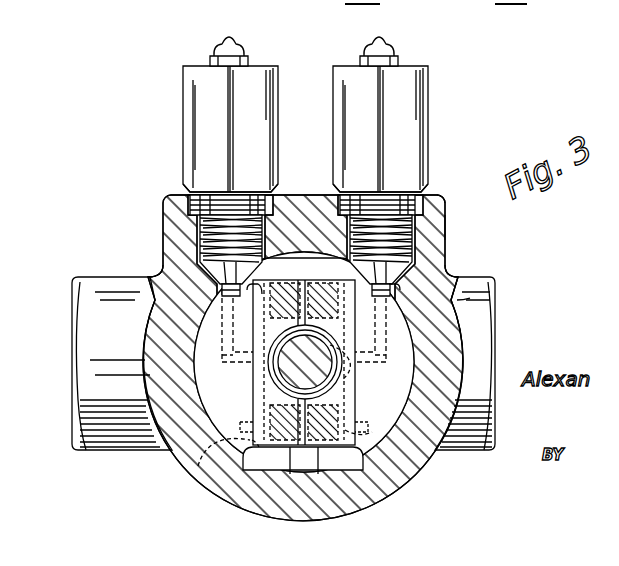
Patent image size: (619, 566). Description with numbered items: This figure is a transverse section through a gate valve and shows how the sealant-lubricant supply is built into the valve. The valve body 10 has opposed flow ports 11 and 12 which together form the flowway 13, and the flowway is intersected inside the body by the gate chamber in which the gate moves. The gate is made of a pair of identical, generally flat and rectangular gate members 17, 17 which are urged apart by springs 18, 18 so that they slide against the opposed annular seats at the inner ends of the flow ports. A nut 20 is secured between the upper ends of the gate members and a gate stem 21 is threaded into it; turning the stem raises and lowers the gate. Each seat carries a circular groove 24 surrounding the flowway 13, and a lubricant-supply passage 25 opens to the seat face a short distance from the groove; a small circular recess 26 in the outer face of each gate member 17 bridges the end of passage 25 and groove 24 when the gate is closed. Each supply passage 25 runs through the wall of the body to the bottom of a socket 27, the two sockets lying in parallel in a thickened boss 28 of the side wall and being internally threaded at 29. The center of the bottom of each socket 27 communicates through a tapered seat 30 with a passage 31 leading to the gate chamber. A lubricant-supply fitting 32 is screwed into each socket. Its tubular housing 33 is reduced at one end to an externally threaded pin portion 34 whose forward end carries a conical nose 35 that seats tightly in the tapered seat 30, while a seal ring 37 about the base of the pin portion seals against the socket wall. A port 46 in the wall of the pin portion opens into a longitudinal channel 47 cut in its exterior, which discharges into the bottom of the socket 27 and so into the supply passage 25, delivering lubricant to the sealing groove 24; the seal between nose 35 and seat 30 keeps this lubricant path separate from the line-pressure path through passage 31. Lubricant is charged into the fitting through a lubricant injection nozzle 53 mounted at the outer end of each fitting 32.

The valve body 10 is at (378, 490).
The flow port 11 is at (74, 428).
The flow port 12 is at (466, 452).
The flowway 13 is at (95, 405).
The gate member 17 is at (258, 395).
The spring 18 is at (260, 447).
The nut 20 is at (278, 346).
The gate stem 21 is at (272, 372).
The circular groove 24 is at (198, 466).
The lubricant-supply passage 25 is at (240, 342).
The circular recess or channel 26 is at (350, 372).
The socket 27 is at (170, 250).
The boss 28 is at (440, 220).
The internal threads 29 is at (200, 222).
The tapered seat 30 is at (160, 272).
The passage 31 is at (170, 310).
The lubricant-supply fitting 32 is at (174, 106).
The tubular housing 33 is at (184, 84).
The pin portion 34 is at (440, 212).
The conical nose 35 is at (470, 300).
The seal ring 37 is at (360, 194).
The port 46 is at (392, 194).
The longitudinal channel 47 is at (318, 282).
The lubricant injection nozzle 53 is at (240, 40).